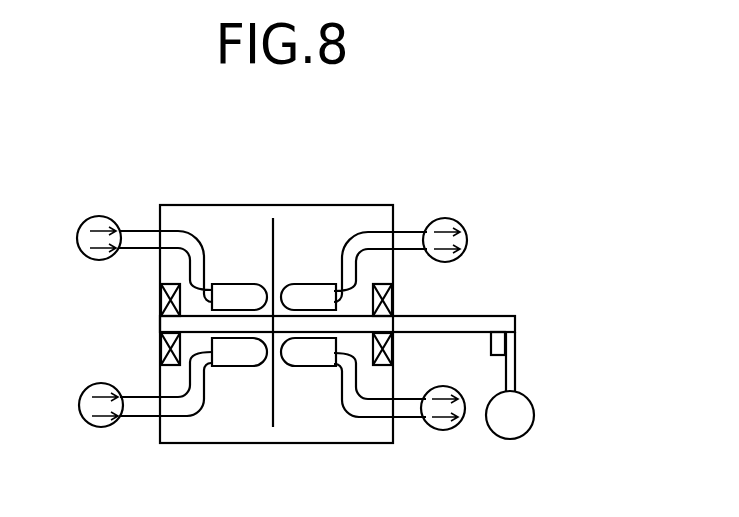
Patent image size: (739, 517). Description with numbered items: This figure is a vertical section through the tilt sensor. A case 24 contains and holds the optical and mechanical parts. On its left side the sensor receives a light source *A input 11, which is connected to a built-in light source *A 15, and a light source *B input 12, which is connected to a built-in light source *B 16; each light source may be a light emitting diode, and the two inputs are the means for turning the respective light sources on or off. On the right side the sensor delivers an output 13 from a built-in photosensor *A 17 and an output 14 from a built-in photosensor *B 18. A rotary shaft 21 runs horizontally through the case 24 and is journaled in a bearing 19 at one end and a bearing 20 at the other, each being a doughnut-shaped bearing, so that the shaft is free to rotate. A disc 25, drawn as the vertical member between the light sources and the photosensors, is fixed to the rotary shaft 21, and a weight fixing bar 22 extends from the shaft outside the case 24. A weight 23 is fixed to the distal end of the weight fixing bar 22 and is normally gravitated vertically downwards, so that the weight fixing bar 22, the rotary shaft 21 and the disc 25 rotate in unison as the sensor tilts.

The light source *A input 11 is at (83, 215).
The light source *B input 12 is at (80, 390).
The output 13 is at (467, 233).
The output 14 is at (458, 427).
The light source *A 15 is at (240, 285).
The light source *B 16 is at (240, 366).
The photosensor *A 17 is at (308, 285).
The photosensor *B 18 is at (305, 366).
The bearing 19 is at (160, 350).
The bearing 20 is at (394, 300).
The rotary shaft 21 is at (517, 322).
The weight fixing bar 22 is at (517, 360).
The weight 23 is at (534, 412).
The case 24 is at (158, 430).
The disc 25 is at (272, 428).